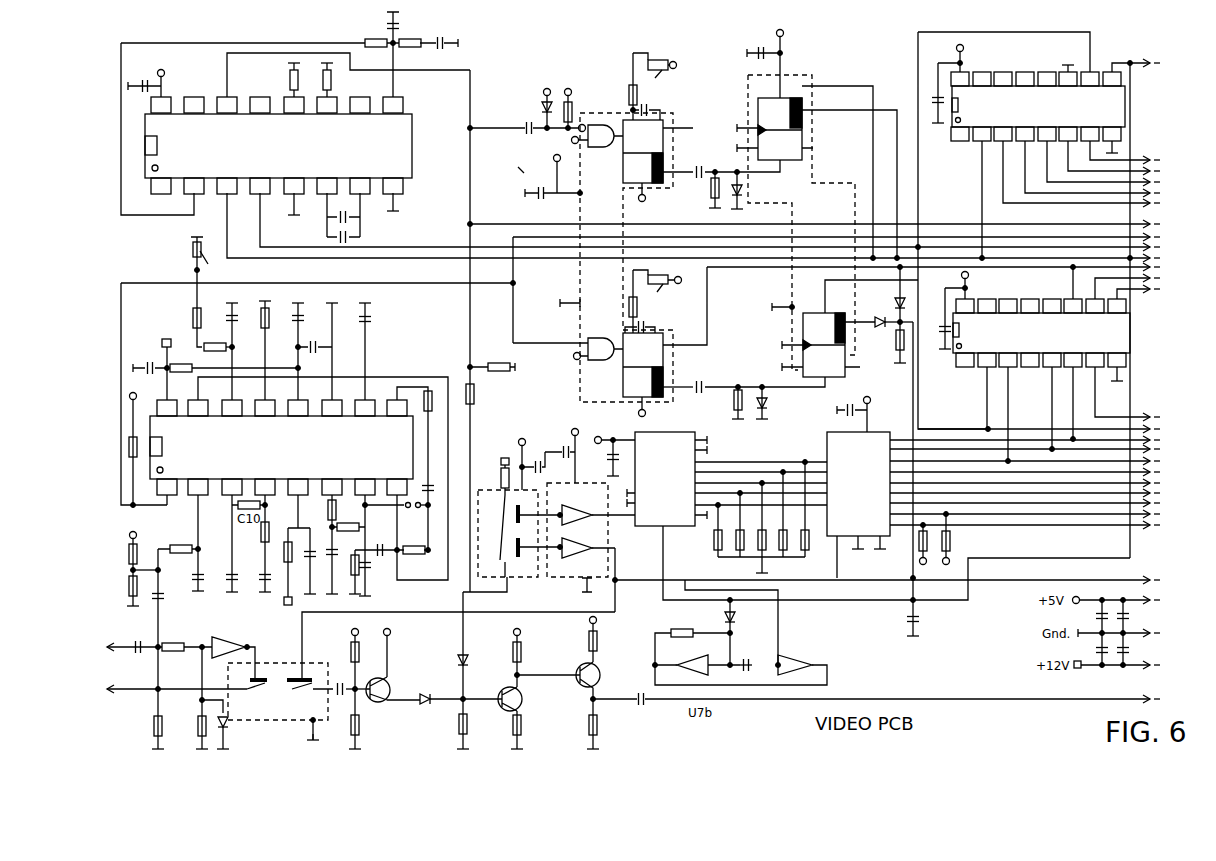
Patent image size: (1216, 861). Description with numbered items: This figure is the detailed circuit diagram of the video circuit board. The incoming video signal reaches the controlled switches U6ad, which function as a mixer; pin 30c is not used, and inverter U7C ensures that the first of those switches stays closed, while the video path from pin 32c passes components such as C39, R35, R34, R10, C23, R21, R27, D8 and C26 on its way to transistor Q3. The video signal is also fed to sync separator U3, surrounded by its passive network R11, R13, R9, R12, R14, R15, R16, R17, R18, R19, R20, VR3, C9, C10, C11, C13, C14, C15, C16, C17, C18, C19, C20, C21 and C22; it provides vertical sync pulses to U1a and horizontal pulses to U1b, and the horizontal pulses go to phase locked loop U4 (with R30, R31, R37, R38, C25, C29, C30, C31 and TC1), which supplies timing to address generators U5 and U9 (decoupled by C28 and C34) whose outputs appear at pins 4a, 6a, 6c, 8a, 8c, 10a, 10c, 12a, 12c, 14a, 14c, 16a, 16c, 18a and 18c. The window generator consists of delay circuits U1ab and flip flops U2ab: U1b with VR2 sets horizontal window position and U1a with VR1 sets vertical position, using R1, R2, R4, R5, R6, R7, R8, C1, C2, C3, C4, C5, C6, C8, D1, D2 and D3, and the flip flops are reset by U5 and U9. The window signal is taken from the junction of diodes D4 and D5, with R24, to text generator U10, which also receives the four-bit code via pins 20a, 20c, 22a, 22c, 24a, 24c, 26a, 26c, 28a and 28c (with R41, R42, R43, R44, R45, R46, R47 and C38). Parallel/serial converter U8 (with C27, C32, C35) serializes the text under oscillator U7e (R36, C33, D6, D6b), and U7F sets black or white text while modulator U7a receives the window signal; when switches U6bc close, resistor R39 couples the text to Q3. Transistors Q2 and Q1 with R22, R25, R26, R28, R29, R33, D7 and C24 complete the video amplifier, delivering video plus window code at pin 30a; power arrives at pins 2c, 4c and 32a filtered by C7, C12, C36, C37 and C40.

The sync separator U3 is at (281, 447).
The phase locked loop (PLL) U4 is at (278, 145).
The address generator U5 is at (1038, 106).
The address generator U9 is at (1041, 333).
The parallel/serial converter U8 is at (667, 491).
The text generator U10 is at (862, 505).
The window generator delay circuits U1ab is at (610, 265).
The window generator flip flops U2ab is at (811, 228).
The controlled switches (mixer) U6ad is at (361, 676).
The switches U6bc is at (518, 533).
The inverter U7C is at (227, 649).
The buffer controlling window colour U7F is at (591, 530).
The modulator U7a is at (583, 563).
The oscillator U7e is at (742, 632).
The transistor Q1 is at (597, 680).
The transistor Q2 is at (503, 699).
The transistor Q3 is at (393, 666).
The variable resistor VR1 is at (657, 274).
The variable resistor VR2 is at (656, 58).
The variable resistor VR3 is at (186, 272).
The resistor R1 is at (577, 109).
The resistor R2 is at (642, 301).
The resistor R4 is at (622, 86).
The resistor R5 is at (728, 403).
The resistor R6 is at (492, 359).
The resistor R7 is at (706, 190).
The resistor R8 is at (480, 394).
The resistor R9 is at (281, 566).
The resistor R10 is at (146, 732).
The resistor R11 is at (178, 541).
The resistor R12 is at (320, 541).
The resistor R13 is at (253, 540).
The resistor R14 is at (348, 520).
The resistor R15 is at (348, 572).
The resistor R16 is at (417, 468).
The resistor R17 is at (413, 542).
The resistor R18 is at (234, 375).
The resistor R19 is at (185, 327).
The resistor R20 is at (216, 354).
The resistor R21 is at (120, 551).
The resistor R22 is at (606, 640).
The resistor R24 is at (887, 342).
The resistor R25 is at (530, 658).
The resistor R26 is at (368, 659).
The resistor R27 is at (121, 588).
The resistor R28 is at (605, 724).
The resistor R29 is at (529, 730).
The resistor R30 is at (339, 80).
The resistor R31 is at (282, 80).
The resistor R33 is at (367, 719).
The resistor R34 is at (197, 698).
The resistor R35 is at (185, 640).
The resistor R36 is at (692, 640).
The resistor R37 is at (373, 52).
The resistor R38 is at (410, 52).
The resistor R39 is at (493, 476).
The resistor R41 is at (799, 509).
The resistor R42 is at (777, 514).
The resistor R43 is at (734, 525).
The resistor R44 is at (756, 520).
The resistor R45 is at (712, 531).
The resistor R46 is at (940, 538).
The resistor R47 is at (917, 544).
The capacitor C1 is at (524, 135).
The capacitor C2 is at (550, 177).
The capacitor C3 is at (642, 321).
The capacitor C4 is at (765, 64).
The capacitor C5 is at (651, 104).
The capacitor C6 is at (684, 394).
The capacitor C7 is at (1112, 631).
The capacitor C8 is at (721, 164).
The capacitor C9 is at (225, 543).
The capacitor C10 is at (189, 543).
The capacitor C11 is at (150, 374).
The capacitor C12 is at (1090, 649).
The capacitor C13 is at (304, 561).
The capacitor C14 is at (326, 571).
The capacitor C15 is at (257, 574).
The capacitor C16 is at (367, 575).
The capacitor C17 is at (382, 543).
The capacitor C18 is at (436, 488).
The capacitor C19 is at (376, 351).
The capacitor C20 is at (309, 351).
The capacitor C21 is at (315, 353).
The capacitor C22 is at (243, 351).
The capacitor C23 is at (170, 596).
The capacitor C24 is at (871, 706).
The capacitor C25 is at (146, 82).
The capacitor C26 is at (348, 682).
The capacitor C27 is at (564, 456).
The capacitor C28 is at (941, 84).
The capacitor C29 is at (343, 215).
The capacitor C30 is at (405, 54).
The capacitor C31 is at (445, 35).
The capacitor C32 is at (545, 465).
The capacitor C33 is at (747, 657).
The capacitor C34 is at (947, 311).
The capacitor C35 is at (609, 457).
The capacitor C36 is at (1135, 649).
The capacitor C37 is at (1135, 631).
The capacitor C38 is at (854, 415).
The capacitor C39 is at (140, 641).
The capacitor C40 is at (925, 618).
The trimmer capacitor TC1 is at (358, 238).
The diode D1 is at (538, 109).
The diode D2 is at (771, 403).
The diode D3 is at (731, 190).
The diode D4 is at (889, 315).
The diode D5 is at (892, 294).
The diode D6 is at (437, 705).
The diode D6 (second) D6b is at (739, 632).
The diode D7 is at (482, 660).
The diode D8 is at (232, 733).
The connector pin 2c (+5V) 2c is at (1160, 601).
The connector pin 4a is at (1160, 64).
The connector pin 4c (+12V) 4c is at (1160, 666).
The pin 6a is at (1160, 161).
The pin 6c is at (1168, 174).
The pin 8a is at (1160, 183).
The connector pin 8c is at (1168, 196).
The connector pin 10a is at (1164, 205).
The connector pin 10c is at (1164, 225).
The connector pin 12a is at (1173, 238).
The connector pin 12c is at (1164, 248).
The connector pin 14a is at (1173, 260).
The connector pin 14c is at (1164, 269).
The connector pin 16a is at (1164, 291).
The connector pin 16c is at (1172, 281).
The connector pin 18a is at (1164, 418).
The connector pin 18c is at (1172, 431).
The connector pin 20a is at (1173, 516).
The connector pin 20c is at (1164, 526).
The pin 22a is at (1173, 494).
The pin 22c is at (1164, 504).
The pin 24a is at (1173, 473).
The pin 24c is at (1164, 484).
The pin 26a is at (1173, 452).
The pin 26c is at (1164, 462).
The pin 28a is at (1164, 581).
The pin 28c is at (1164, 441).
The pin 30a is at (1164, 700).
The pin 30c is at (120, 648).
The connector pin 32a (ground) 32a is at (1164, 634).
The pin 32c is at (98, 690).